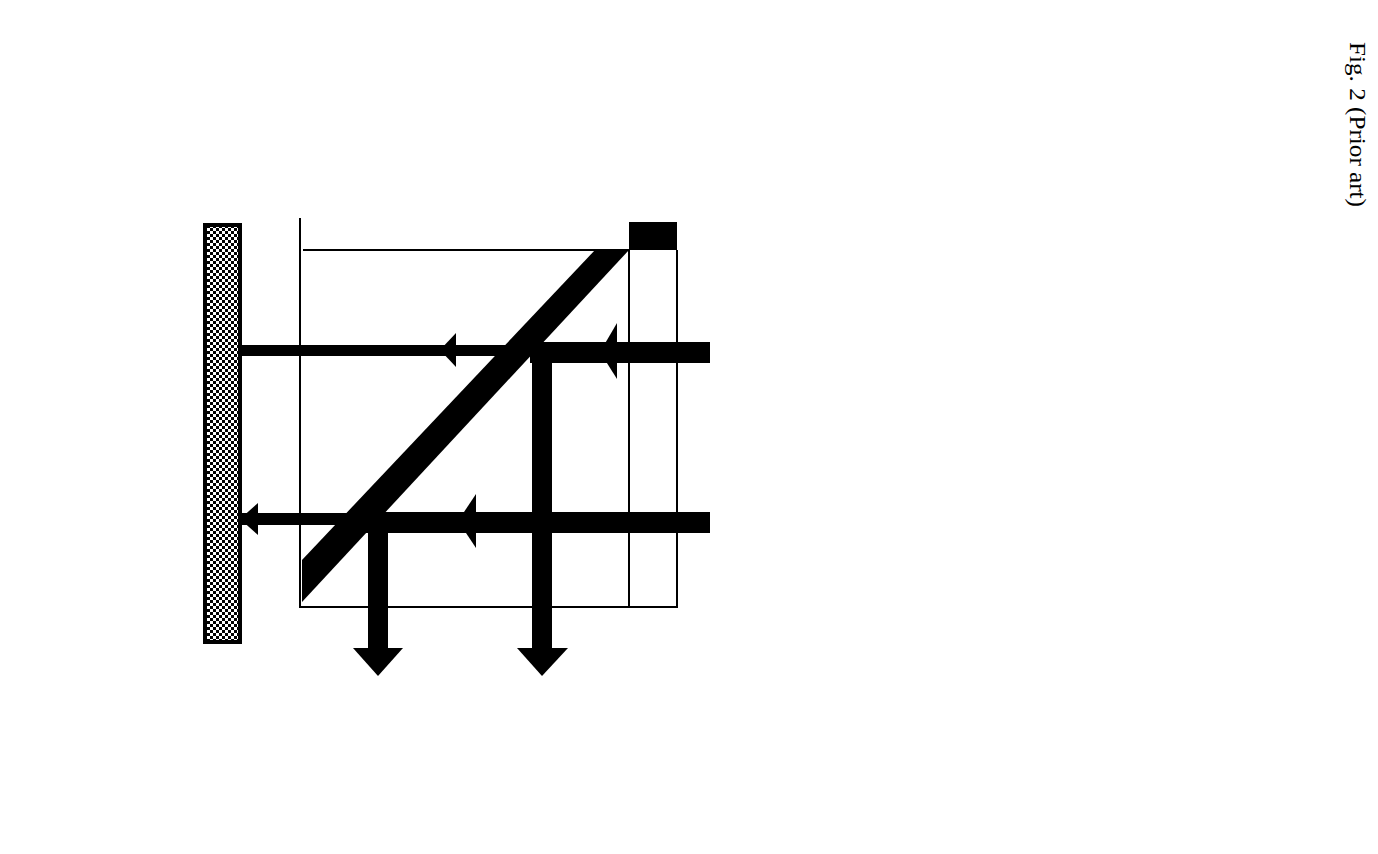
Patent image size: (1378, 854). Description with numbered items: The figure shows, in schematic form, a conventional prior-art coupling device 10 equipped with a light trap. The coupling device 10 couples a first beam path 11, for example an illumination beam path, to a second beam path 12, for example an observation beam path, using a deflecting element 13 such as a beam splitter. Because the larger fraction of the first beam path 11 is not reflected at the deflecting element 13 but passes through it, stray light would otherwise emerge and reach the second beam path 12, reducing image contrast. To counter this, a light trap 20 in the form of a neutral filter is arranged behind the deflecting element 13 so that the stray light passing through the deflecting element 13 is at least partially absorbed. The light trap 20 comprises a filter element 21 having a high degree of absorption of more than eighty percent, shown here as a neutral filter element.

The coupling device 10 is at (446, 178).
The first beam path 11 is at (693, 340).
The second beam path 12 is at (398, 648).
The deflecting element 13 is at (493, 403).
The light trap 20 is at (172, 366).
The filter element 21 is at (207, 430).